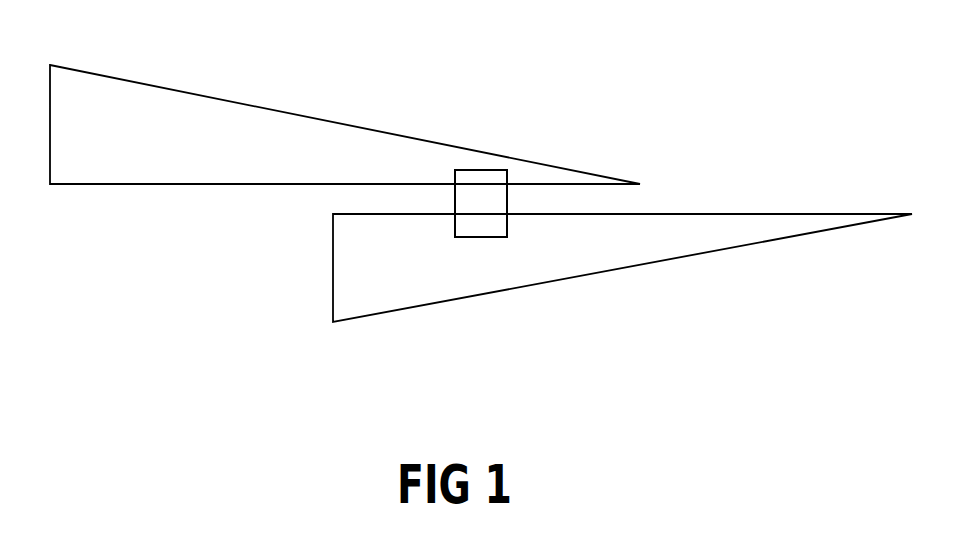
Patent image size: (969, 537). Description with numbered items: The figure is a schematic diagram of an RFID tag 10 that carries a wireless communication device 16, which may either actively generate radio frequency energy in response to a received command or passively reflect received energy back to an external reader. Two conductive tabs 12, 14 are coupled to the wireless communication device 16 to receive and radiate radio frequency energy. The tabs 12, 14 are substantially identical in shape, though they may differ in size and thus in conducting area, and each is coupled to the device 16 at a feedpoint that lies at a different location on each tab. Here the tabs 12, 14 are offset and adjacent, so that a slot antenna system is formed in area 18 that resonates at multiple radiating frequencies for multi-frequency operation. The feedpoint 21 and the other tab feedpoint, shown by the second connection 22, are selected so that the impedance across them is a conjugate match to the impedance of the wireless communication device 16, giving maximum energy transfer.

The RFID tag 10 is at (424, 86).
The conductive tab 12 is at (345, 124).
The conductive tab 14 is at (622, 268).
The wireless communication device 16 is at (481, 203).
The slot antenna area 18 is at (640, 200).
The tab feedpoint 21 is at (440, 192).
The second beam 22 is at (440, 206).